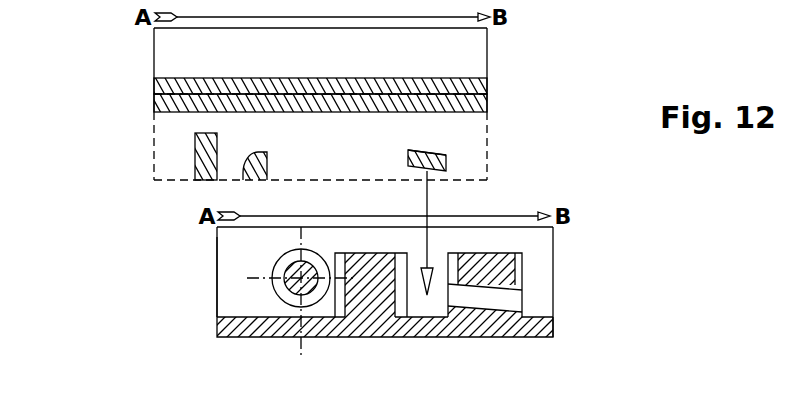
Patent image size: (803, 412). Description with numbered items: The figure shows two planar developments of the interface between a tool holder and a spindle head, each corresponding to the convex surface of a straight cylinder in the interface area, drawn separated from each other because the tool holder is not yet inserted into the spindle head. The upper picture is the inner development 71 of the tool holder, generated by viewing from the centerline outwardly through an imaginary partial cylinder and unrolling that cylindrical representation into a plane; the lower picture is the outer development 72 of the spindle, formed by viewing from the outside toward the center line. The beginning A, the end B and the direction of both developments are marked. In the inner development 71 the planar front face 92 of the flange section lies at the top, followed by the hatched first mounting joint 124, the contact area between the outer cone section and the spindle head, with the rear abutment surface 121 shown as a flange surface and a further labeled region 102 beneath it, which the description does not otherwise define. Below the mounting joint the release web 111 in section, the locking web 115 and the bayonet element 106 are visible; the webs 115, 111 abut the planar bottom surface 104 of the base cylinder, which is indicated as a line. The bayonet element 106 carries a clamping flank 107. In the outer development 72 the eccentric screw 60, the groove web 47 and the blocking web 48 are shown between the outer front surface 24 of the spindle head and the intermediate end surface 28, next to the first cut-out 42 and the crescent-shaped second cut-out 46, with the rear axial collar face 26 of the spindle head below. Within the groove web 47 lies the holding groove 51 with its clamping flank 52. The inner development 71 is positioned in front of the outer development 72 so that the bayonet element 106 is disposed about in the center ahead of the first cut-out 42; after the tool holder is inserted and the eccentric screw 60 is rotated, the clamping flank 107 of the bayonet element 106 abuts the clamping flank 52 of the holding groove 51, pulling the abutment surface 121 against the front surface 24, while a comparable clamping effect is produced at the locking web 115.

The inner development 71 is at (154, 53).
The abutment surface 121 is at (172, 93).
The lower wall layer 102 is at (363, 206).
The release web 111 is at (205, 148).
The locking web 115 is at (243, 170).
The front face 92 is at (386, 38).
The first mounting joint 124 is at (462, 88).
The clamping flank 107 is at (430, 152).
The bayonet element 106 is at (446, 160).
The bottom surface 104 is at (450, 180).
The front surface 24 is at (451, 233).
The groove web 47 is at (488, 269).
The intermediate end surface 28 is at (538, 314).
The eccentric screw 60 is at (272, 274).
The outer development 72 is at (217, 290).
The second cut-out 46 is at (244, 302).
The rear planar axial collar face 26 is at (275, 335).
The blocking web 48 is at (370, 286).
The first cut-out 42 is at (428, 308).
The holding groove 51 is at (477, 297).
The clamping flank 52 is at (493, 288).